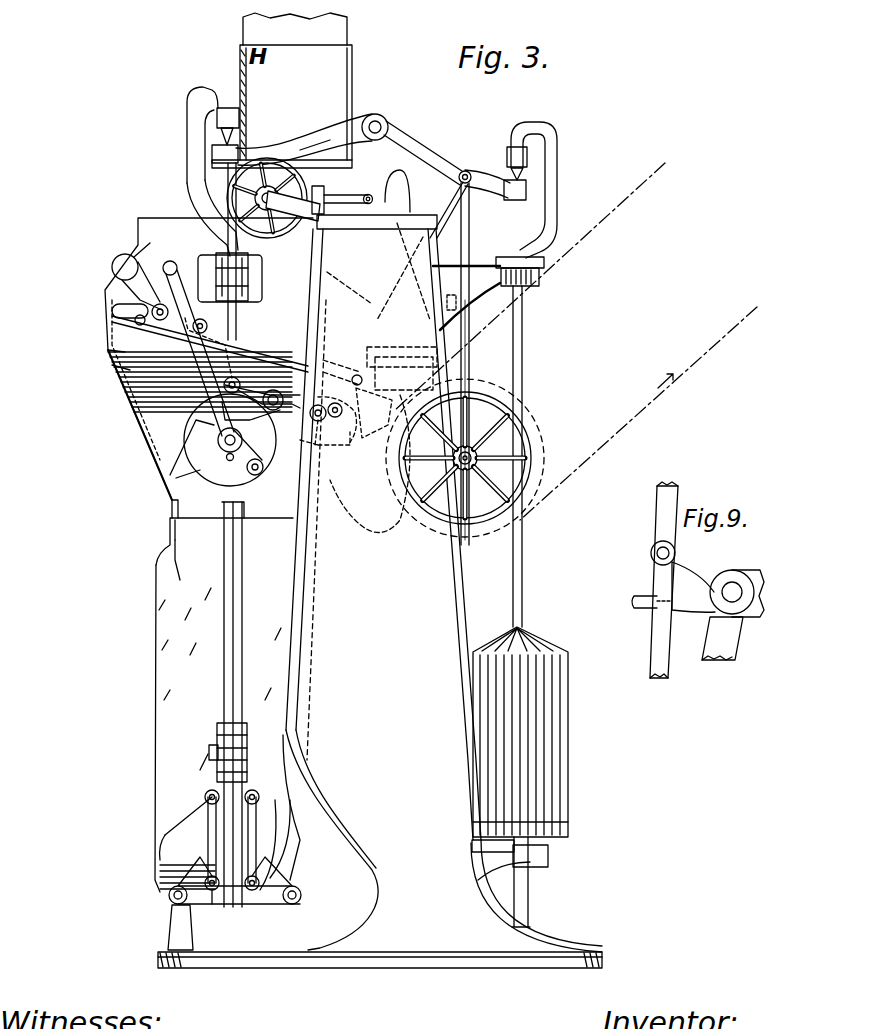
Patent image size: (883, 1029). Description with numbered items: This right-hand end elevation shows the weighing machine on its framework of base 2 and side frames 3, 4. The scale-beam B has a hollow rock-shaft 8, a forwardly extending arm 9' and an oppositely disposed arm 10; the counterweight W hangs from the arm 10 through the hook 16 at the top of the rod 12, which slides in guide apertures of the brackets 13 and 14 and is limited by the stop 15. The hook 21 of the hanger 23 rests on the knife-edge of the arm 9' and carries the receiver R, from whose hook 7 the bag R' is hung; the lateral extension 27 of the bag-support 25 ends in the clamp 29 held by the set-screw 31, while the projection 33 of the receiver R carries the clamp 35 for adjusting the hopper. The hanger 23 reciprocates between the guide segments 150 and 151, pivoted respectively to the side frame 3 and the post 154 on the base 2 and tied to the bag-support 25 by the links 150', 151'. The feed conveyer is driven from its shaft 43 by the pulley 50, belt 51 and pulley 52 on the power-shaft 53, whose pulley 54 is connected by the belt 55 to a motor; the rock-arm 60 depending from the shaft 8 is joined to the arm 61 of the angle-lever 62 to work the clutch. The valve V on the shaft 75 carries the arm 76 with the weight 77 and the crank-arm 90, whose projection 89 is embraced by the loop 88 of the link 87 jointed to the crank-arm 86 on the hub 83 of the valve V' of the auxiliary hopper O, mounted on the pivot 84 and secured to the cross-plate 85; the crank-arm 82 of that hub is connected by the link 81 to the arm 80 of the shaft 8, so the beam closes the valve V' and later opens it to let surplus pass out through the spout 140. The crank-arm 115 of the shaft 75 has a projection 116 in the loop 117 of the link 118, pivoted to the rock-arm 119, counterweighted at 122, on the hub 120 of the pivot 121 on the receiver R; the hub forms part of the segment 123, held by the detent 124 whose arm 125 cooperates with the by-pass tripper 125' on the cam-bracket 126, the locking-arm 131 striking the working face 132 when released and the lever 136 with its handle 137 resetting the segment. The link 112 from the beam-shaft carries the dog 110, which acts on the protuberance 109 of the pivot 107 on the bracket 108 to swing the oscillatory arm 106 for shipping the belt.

In FIG. 3, the base 2 is at (352, 969).
In FIG. 3, the side frame 3 is at (332, 840).
In FIG. 3, the side frame 4 is at (458, 618).
In FIG. 3, the spur or hook 7 is at (168, 524).
In FIG. 3, the hollow shaft 8 is at (386, 121).
In FIG. 3, the arm 9' is at (304, 129).
In FIG. 3, the arm 10 is at (485, 178).
In FIG. 3, the longitudinal rod 12 is at (524, 580).
In FIG. 3, the bracket 13 is at (541, 276).
In FIG. 3, the bracket 14 is at (549, 856).
In FIG. 3, the stop or shoulder 15 is at (535, 258).
In FIG. 3, the hook 16 is at (558, 160).
In FIG. 3, the hook 21 is at (186, 119).
In FIG. 3, the hanger 23 is at (244, 595).
In FIG. 3, the bag-support 25 is at (168, 893).
In FIG. 3, the lateral extension 27 is at (252, 790).
In FIG. 3, the clamp 29 is at (248, 745).
In FIG. 3, the set-screw 31 is at (209, 752).
In FIG. 3, the projection 33 is at (250, 262).
In FIG. 3, the clamp 35 is at (248, 282).
In FIG. 3, the shaft 43 is at (267, 186).
In FIG. 3, the pulley 50 is at (300, 150).
In FIG. 3, the belt 51 is at (388, 231).
In FIG. 3, the pulley 52 is at (518, 398).
In FIG. 3, the power-shaft 53 is at (456, 462).
In FIG. 3, the pulley 54 is at (542, 438).
In FIG. 3, the belt 55 is at (666, 392).
In FIG. 3, the rock-arm 60 is at (403, 183).
In FIG. 3, the arm 61 is at (340, 195).
In FIG. 3, the lever 62 is at (282, 156).
In FIG. 3, the shaft 75 is at (125, 362).
In FIG. 3, the arm 76 is at (140, 288).
In FIG. 3, the valve-actuator or weight 77 is at (112, 266).
In FIG. 3, the arm 80 is at (440, 165).
In FIG. 3, the link 81 is at (470, 213).
In FIG. 3, the crank-arm 82 is at (352, 375).
In FIG. 3, the hub 83 is at (352, 448).
In FIG. 3, the pivot 84 is at (338, 418).
In FIG. 3, the cross-plate 85 is at (405, 352).
In FIG. 3, the crank-arm 86 is at (358, 418).
In FIG. 3, the link 87 is at (250, 350).
In FIG. 3, the loop 88 is at (152, 313).
In FIG. 3, the projection 89 is at (138, 325).
In FIG. 3, the crank-arm 90 is at (112, 311).
In FIG. 9, the oscillatory arm 106 is at (725, 648).
In FIG. 9, the pivot 107 is at (735, 585).
In FIG. 9, the bracket 108 is at (755, 612).
In FIG. 9, the protuberance 109 is at (690, 598).
In FIG. 3, the belt-shipper actuator 110 is at (470, 310).
In FIG. 9, the belt-shipper actuator 110 is at (648, 605).
In FIG. 3, the link 112 is at (470, 350).
In FIG. 9, the link 112 is at (657, 648).
In FIG. 3, the crank-arm 115 is at (128, 395).
In FIG. 3, the projection 116 is at (196, 332).
In FIG. 3, the longitudinal loop 117 is at (185, 272).
In FIG. 3, the link 118 is at (210, 350).
In FIG. 3, the rock-arm 119 is at (185, 440).
In FIG. 3, the hub 120 is at (210, 455).
In FIG. 3, the pivot 121 is at (195, 480).
In FIG. 3, the counterweight 122 is at (215, 405).
In FIG. 3, the segment 123 is at (245, 490).
In FIG. 3, the detent 124 is at (360, 310).
In FIG. 3, the arm of detent 125 is at (262, 364).
In FIG. 3, the by-pass tripper 125' is at (217, 423).
In FIG. 3, the cam-bracket 126 is at (305, 455).
In FIG. 3, the locking-arm 131 is at (227, 455).
In FIG. 3, the working face 132 is at (258, 472).
In FIG. 3, the lever 136 is at (225, 390).
In FIG. 3, the handle 137 is at (163, 266).
In FIG. 3, the spout 140 is at (345, 484).
In FIG. 3, the segment 150 is at (276, 895).
In FIG. 3, the link 150' is at (309, 812).
In FIG. 3, the segment 151 is at (213, 912).
In FIG. 3, the link 151' is at (163, 828).
In FIG. 3, the post 154 is at (170, 923).
In FIG. 3, the scale-beam B is at (375, 115).
In FIG. 3, the reservoir or hopper O is at (320, 433).
In FIG. 3, the receiver R is at (200, 393).
In FIG. 3, the bag R' is at (207, 706).
In FIG. 3, the valve V is at (192, 368).
In FIG. 3, the valve V' is at (380, 413).
In FIG. 3, the counterweight W is at (569, 723).